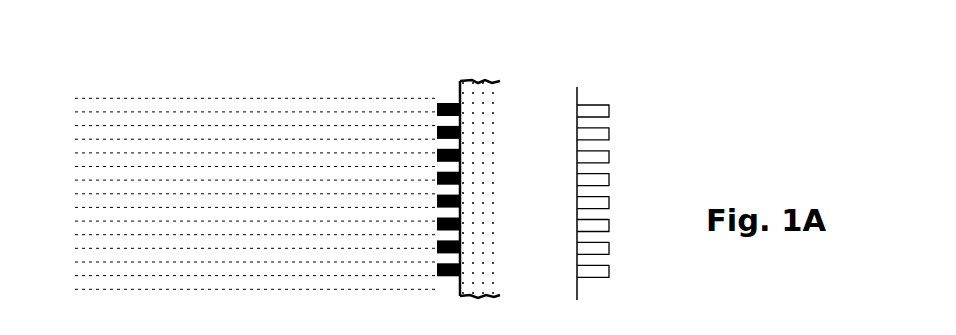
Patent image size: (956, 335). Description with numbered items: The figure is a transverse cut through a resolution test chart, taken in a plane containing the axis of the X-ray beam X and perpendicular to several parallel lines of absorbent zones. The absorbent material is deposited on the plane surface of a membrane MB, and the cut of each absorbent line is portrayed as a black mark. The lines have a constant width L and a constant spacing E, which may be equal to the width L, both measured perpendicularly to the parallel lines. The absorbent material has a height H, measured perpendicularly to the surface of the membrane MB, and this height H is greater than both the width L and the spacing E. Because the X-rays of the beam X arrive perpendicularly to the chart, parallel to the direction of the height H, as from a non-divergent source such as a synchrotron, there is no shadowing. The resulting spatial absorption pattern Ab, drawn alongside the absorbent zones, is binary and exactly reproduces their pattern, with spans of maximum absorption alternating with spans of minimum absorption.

The beam X is at (228, 193).
The membrane MB is at (487, 105).
The width L is at (442, 129).
The spacing E is at (437, 128).
The height H is at (489, 312).
The spatial absorption pattern Ab is at (577, 87).